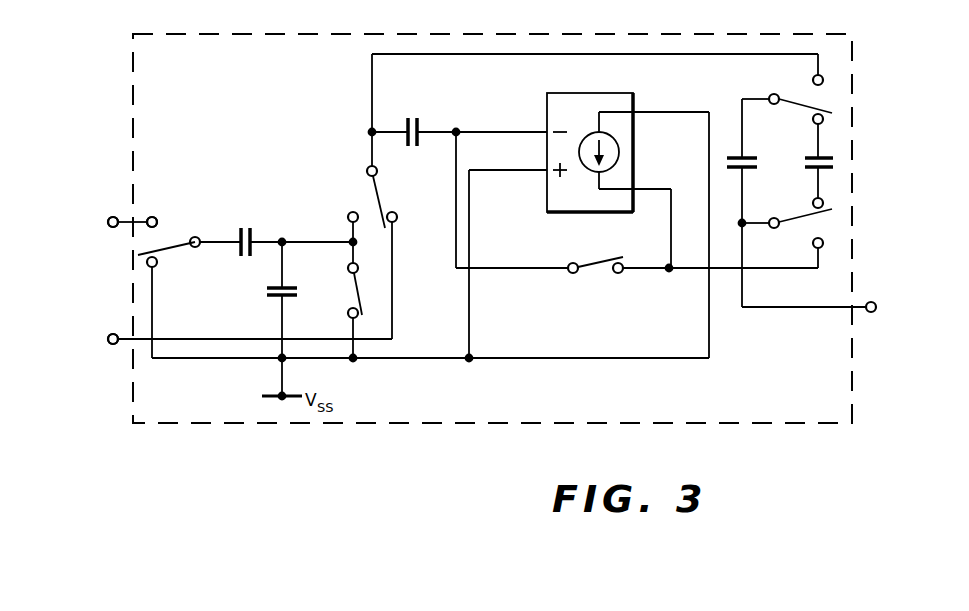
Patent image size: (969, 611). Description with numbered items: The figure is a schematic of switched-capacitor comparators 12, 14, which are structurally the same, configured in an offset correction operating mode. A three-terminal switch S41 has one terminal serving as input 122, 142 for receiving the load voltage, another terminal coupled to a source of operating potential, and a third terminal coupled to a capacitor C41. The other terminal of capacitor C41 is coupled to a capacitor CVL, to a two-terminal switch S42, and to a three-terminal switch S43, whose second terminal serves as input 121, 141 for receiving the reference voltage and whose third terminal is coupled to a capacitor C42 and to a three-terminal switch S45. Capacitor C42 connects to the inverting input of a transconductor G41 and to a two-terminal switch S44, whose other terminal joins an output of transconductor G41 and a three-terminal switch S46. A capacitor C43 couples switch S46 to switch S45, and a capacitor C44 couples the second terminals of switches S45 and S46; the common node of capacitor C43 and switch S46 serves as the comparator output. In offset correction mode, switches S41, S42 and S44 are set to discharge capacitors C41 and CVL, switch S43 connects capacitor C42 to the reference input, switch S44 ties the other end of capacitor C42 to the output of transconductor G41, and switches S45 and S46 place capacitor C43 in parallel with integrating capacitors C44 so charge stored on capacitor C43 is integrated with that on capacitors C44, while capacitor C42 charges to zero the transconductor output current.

The SC comparator 12 is at (500, 467).
The SC comparator 14 is at (492, 228).
The input terminal 122 is at (102, 201).
The input terminal 142 is at (132, 222).
The input terminal 121 is at (220, 365).
The input terminal 141 is at (113, 339).
The three-terminal switch S41 is at (172, 236).
The two-terminal switch S42 is at (346, 295).
The three-terminal switch S43 is at (368, 199).
The two-terminal switch S44 is at (597, 270).
The three-terminal switch S45 is at (800, 95).
The three-terminal switch S46 is at (805, 228).
The capacitor C41 is at (253, 223).
The input coupling capacitor C42 is at (408, 116).
The capacitor C43 is at (753, 157).
The integrating capacitor C44 is at (805, 170).
The capacitor CVL is at (268, 297).
The transconductor G41 is at (590, 92).